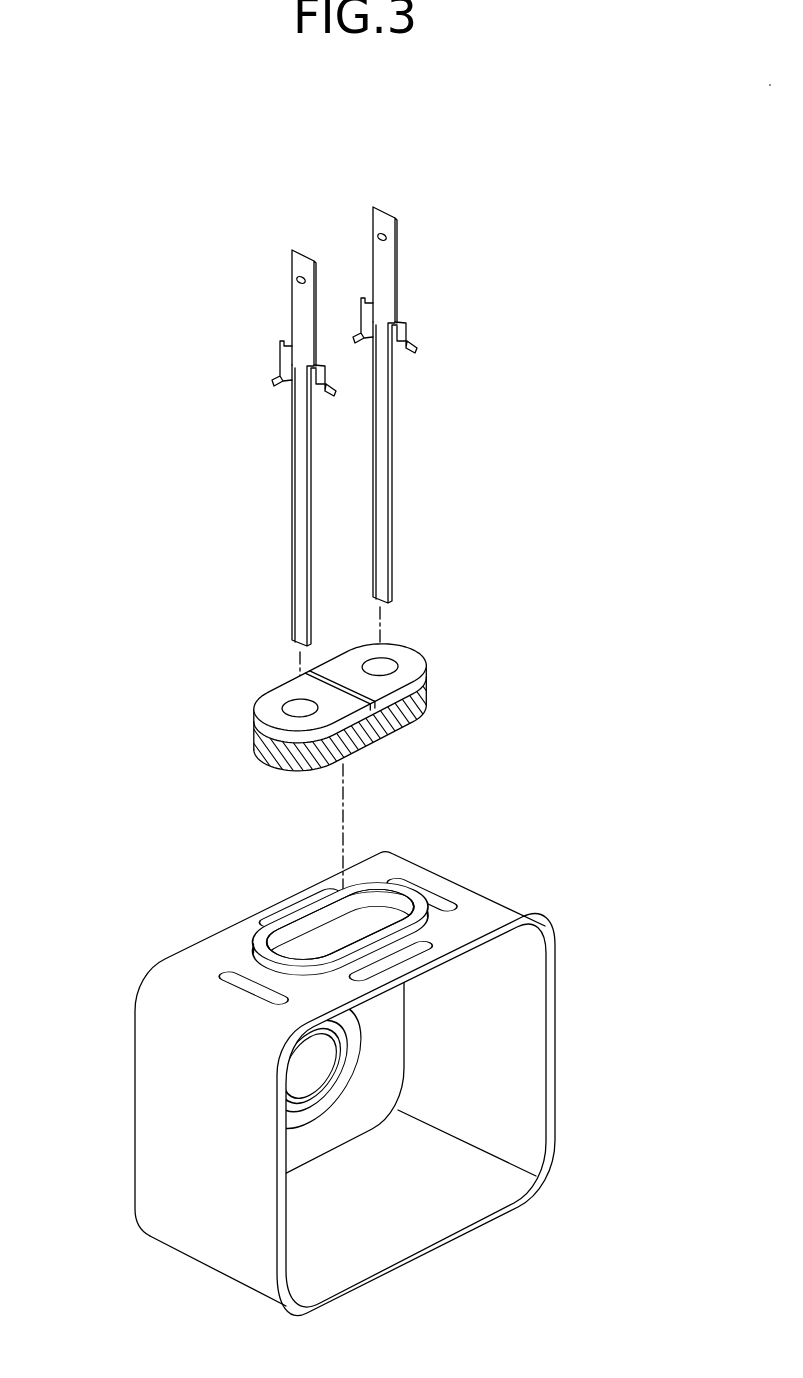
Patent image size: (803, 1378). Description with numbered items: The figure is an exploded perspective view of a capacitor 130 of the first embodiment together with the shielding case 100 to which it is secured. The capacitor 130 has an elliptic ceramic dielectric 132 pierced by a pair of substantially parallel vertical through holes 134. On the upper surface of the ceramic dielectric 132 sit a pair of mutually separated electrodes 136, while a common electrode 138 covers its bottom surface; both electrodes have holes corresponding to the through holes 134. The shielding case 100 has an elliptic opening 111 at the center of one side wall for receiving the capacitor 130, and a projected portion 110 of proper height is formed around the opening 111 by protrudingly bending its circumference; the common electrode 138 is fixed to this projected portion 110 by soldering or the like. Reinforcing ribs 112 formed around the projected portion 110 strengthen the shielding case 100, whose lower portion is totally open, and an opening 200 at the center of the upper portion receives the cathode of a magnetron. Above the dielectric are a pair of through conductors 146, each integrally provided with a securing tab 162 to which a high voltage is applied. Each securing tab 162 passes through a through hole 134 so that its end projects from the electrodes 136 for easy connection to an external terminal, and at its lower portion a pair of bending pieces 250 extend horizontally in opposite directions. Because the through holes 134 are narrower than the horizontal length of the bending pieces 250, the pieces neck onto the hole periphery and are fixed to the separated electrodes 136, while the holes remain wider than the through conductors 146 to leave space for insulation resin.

The shielding case 100 is at (352, 1076).
The projected portion 110 is at (353, 911).
The elliptic opening 111 is at (310, 936).
The reinforcing ribs 112 is at (407, 957).
The capacitor 130 is at (338, 733).
The ceramic dielectric 132 is at (268, 744).
The vertical through holes 134 is at (265, 699).
The separated electrodes 136 is at (462, 623).
The common electrode 138 is at (308, 771).
The through conductors 146 is at (394, 478).
The securing tab 162 is at (392, 212).
The bending pieces 250 is at (414, 343).
The opening 200 is at (310, 1066).